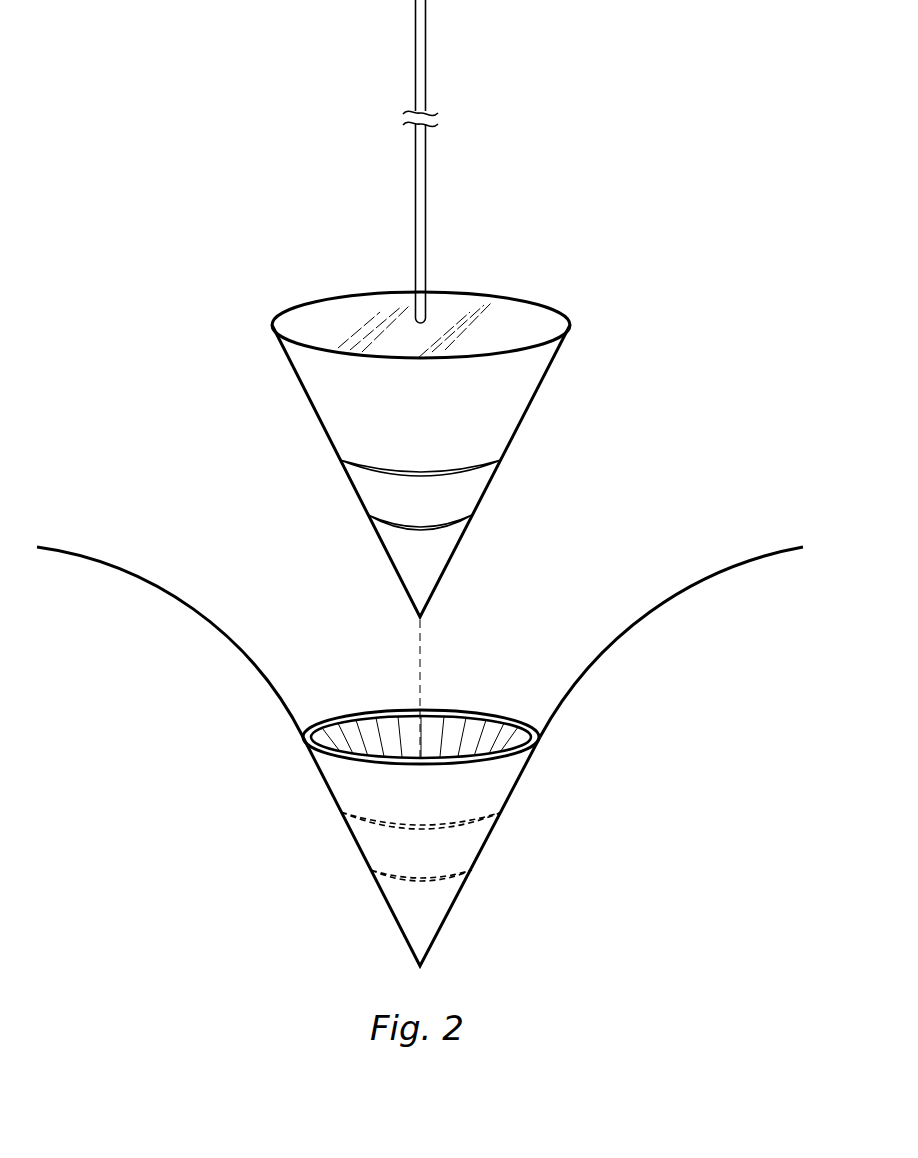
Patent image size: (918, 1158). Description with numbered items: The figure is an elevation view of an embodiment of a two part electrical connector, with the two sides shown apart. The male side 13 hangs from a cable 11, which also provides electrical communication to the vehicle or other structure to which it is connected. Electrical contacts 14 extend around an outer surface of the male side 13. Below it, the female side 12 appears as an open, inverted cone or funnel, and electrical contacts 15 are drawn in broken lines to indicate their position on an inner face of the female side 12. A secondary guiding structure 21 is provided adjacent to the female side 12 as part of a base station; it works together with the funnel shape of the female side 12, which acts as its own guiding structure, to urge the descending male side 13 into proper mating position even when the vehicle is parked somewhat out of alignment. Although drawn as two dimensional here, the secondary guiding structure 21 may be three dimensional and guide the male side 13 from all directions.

The cable 11 is at (415, 64).
The female side 12 is at (311, 763).
The male side 13 is at (297, 320).
The electrical contacts 14 is at (352, 467).
The electrical contacts 15 is at (383, 825).
The secondary guiding structure 21 is at (183, 602).